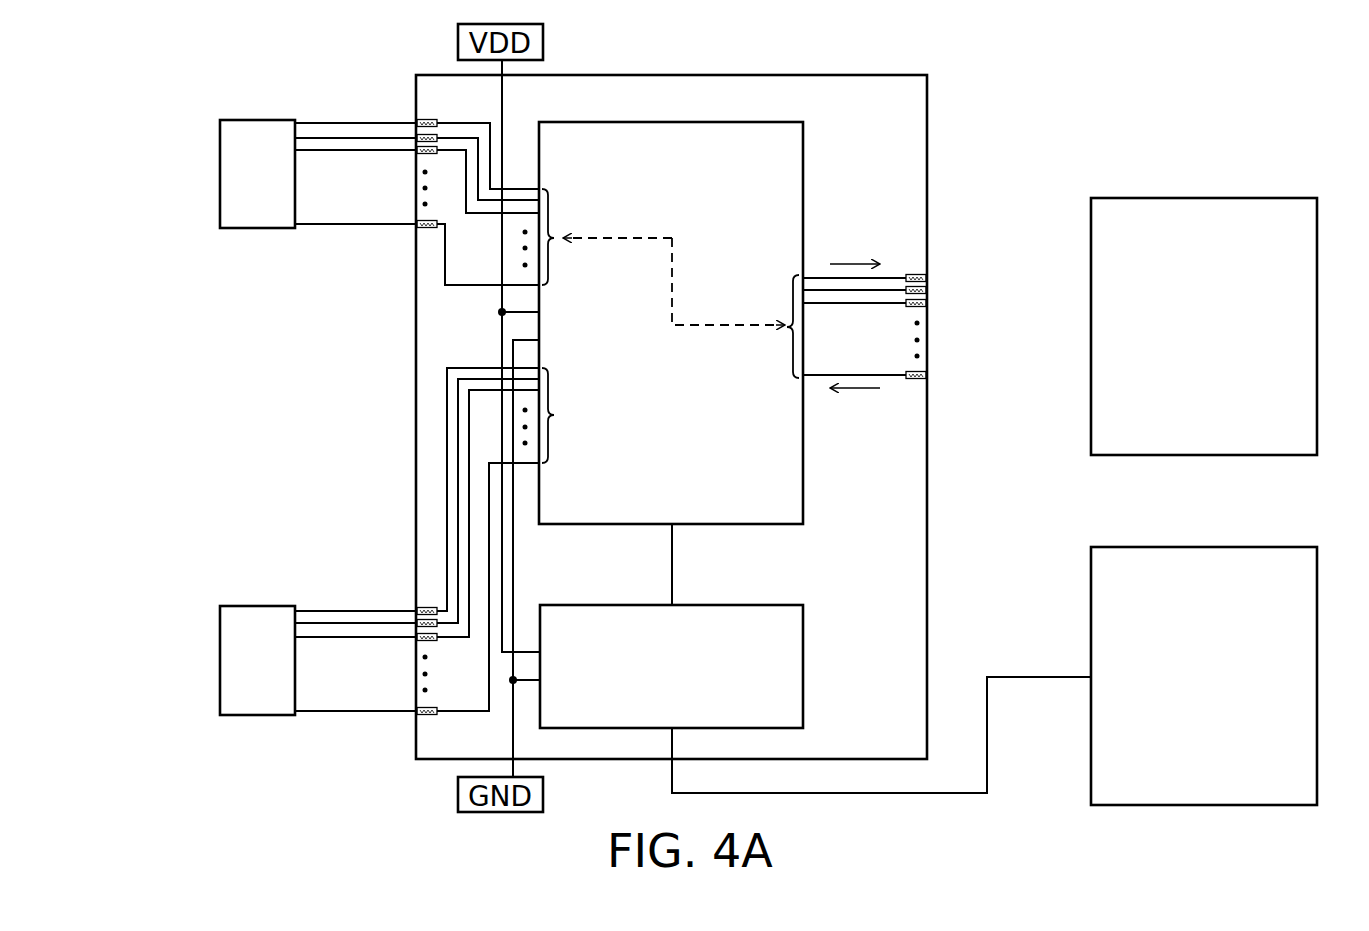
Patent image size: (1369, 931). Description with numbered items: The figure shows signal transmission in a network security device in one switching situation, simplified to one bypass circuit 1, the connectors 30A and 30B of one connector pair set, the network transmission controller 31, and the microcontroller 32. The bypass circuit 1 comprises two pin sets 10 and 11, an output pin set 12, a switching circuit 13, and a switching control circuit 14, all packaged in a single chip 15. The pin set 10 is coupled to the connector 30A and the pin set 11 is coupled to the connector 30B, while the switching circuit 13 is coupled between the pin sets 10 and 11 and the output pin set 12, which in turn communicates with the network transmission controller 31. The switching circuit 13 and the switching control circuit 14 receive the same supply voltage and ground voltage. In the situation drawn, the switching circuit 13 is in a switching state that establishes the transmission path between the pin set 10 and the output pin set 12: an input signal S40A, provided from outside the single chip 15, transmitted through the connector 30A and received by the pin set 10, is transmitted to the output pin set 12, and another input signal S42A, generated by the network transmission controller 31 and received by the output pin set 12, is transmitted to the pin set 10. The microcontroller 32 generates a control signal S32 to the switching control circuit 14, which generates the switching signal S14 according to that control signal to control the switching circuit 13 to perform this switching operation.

The bypass circuit 1 is at (397, 63).
The pin set 10 is at (414, 120).
The pin set 11 is at (414, 606).
The output pin set 12 is at (928, 273).
The switching circuit 13 is at (540, 120).
The switching control circuit 14 is at (541, 603).
The single chip 15 is at (672, 75).
The connector 30A is at (289, 191).
The connector 30B is at (289, 678).
The network transmission controller 31 is at (1093, 196).
The microcontroller 32 is at (1093, 545).
The switching signal S14 is at (682, 546).
The input signal S40A is at (218, 174).
The input signal S42A is at (1088, 327).
The control signal S32 is at (1078, 657).